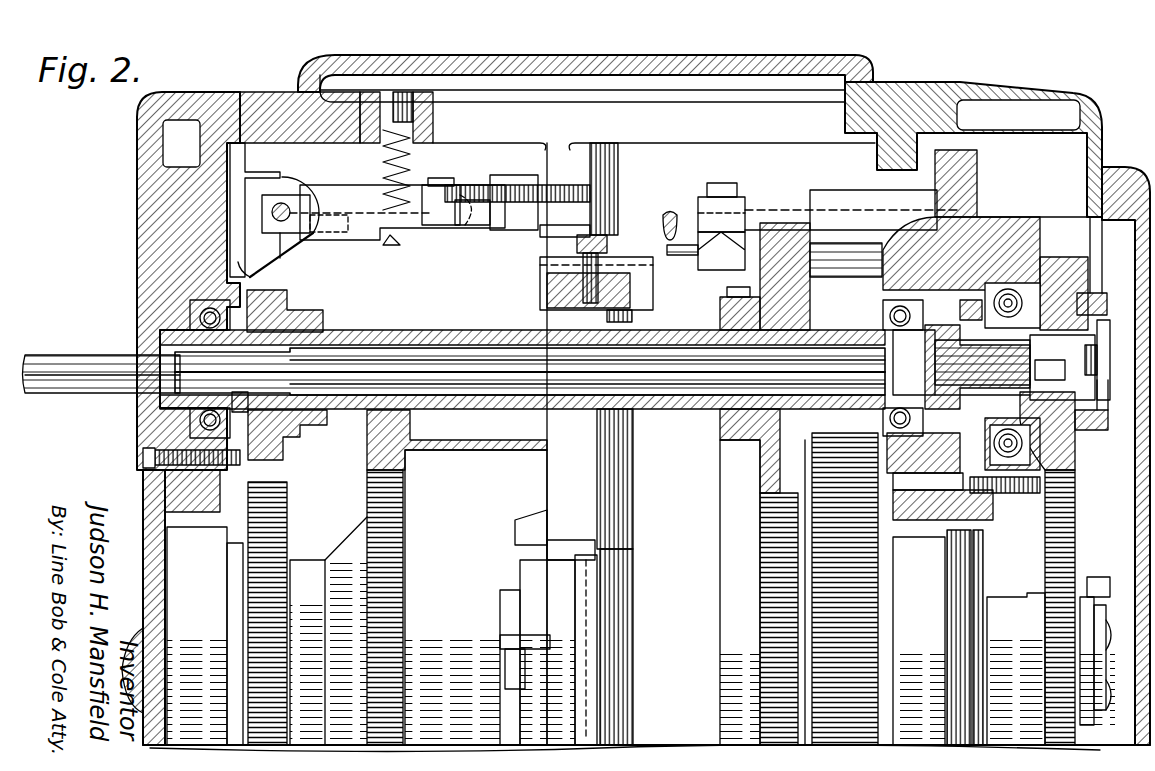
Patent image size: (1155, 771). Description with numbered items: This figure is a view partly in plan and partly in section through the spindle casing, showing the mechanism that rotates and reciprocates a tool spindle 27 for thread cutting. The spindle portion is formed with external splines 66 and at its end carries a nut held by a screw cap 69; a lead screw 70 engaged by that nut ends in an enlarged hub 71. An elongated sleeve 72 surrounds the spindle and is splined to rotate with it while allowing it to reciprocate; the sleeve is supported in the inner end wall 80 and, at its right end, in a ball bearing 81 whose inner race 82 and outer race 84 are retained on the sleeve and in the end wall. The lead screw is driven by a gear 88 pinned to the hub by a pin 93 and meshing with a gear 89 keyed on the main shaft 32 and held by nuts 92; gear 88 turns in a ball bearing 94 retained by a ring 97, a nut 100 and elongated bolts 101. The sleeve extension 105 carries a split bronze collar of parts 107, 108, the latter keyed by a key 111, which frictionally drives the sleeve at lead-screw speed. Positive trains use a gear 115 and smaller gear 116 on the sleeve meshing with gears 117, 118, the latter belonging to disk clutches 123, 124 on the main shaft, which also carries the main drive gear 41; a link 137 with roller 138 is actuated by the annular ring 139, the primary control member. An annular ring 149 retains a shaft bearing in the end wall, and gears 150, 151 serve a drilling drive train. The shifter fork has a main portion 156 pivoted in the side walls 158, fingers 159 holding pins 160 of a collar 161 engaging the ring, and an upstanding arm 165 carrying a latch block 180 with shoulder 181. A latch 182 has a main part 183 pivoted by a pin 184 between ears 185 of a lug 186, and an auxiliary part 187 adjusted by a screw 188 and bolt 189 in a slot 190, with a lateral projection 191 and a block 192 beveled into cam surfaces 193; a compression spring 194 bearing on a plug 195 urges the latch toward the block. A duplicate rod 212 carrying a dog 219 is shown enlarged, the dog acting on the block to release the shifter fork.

The tool spindle 27 is at (64, 360).
The main shaft 32 is at (143, 632).
The main drive gear 41 is at (860, 637).
The splines 66 is at (455, 360).
The screw cap 69 is at (914, 362).
The lead screw 70 is at (1020, 356).
The enlarged hub 71 is at (1062, 368).
The elongated sleeve 72 is at (515, 400).
The inner end wall 80 is at (150, 295).
The ball bearing 81 is at (893, 417).
The inner race 82 is at (890, 320).
The outer race 84 is at (888, 306).
The gear 88 is at (1064, 448).
The gear 89 is at (1076, 531).
The nuts 92 is at (1095, 590).
The pin 93 is at (1100, 360).
The ball bearing 94 is at (993, 442).
The ring 97 is at (1040, 495).
The nut 100 is at (958, 292).
The elongated bolts 101 is at (950, 498).
The extension 105 is at (935, 555).
The collar part 107 is at (982, 397).
The collar part 108 is at (988, 340).
The key 111 is at (960, 310).
The gear 115 is at (722, 438).
The smaller gear 116 is at (398, 450).
The gear 117 is at (762, 598).
The gear 118 is at (400, 492).
The disk clutch 123 is at (710, 530).
The disk clutch 124 is at (466, 528).
The link 137 is at (530, 640).
The roller 138 is at (515, 665).
The annular ring 139 is at (556, 607).
The annular ring 149 is at (972, 580).
The gear 150 is at (288, 448).
The gear 151 is at (288, 478).
The main portion 156 is at (636, 441).
The fingers 159 is at (575, 512).
The pins 160 is at (590, 546).
The annular collar 161 is at (612, 580).
The upstanding arm 165 is at (545, 300).
The latch block 180 is at (646, 250).
The shoulder 181 is at (578, 235).
The latch 182 is at (472, 188).
The main part 183 is at (335, 197).
The pin 184 is at (285, 205).
The ears 185 is at (290, 243).
The lug 186 is at (272, 270).
The auxiliary part 187 is at (525, 227).
The screw 188 is at (585, 185).
The bolt 189 is at (434, 185).
The slot 190 is at (407, 213).
The lateral projection 191 is at (530, 240).
The block 192 is at (300, 257).
The cam surfaces 193 is at (400, 243).
The compression spring 194 is at (418, 150).
The plug 195 is at (430, 133).
The side walls 158 is at (900, 93).
The rod 212 is at (790, 222).
The dog 219 is at (740, 200).